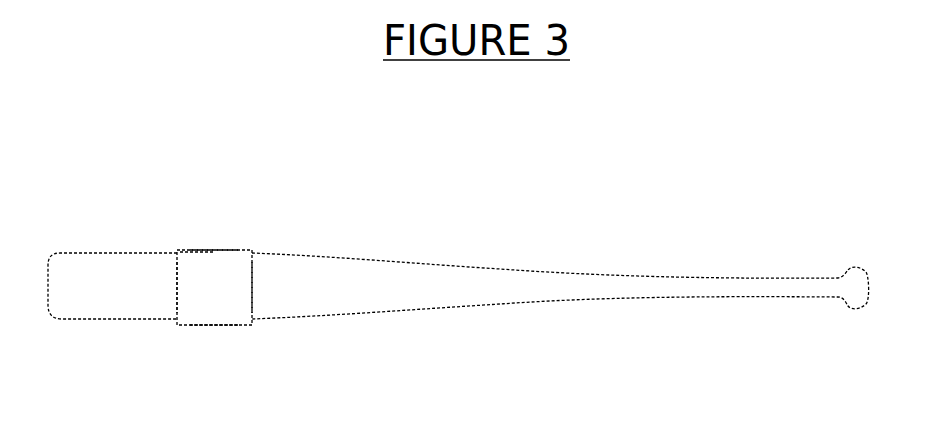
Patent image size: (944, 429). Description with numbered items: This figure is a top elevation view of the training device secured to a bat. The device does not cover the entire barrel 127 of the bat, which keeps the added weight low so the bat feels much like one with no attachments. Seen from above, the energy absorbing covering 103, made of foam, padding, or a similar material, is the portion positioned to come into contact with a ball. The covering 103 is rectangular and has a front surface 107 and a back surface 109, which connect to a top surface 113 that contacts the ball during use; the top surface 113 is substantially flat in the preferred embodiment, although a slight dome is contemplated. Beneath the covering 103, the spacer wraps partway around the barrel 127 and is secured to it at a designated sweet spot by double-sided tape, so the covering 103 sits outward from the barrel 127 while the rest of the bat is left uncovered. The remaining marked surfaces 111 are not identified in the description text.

The electronic sensor module 103 is at (214, 287).
The second side of module 107 is at (253, 290).
The first side of module 109 is at (177, 290).
The lateral sides of module 111 is at (234, 250).
The module housing interior 113 is at (199, 260).
The baseball bat 127 is at (458, 270).